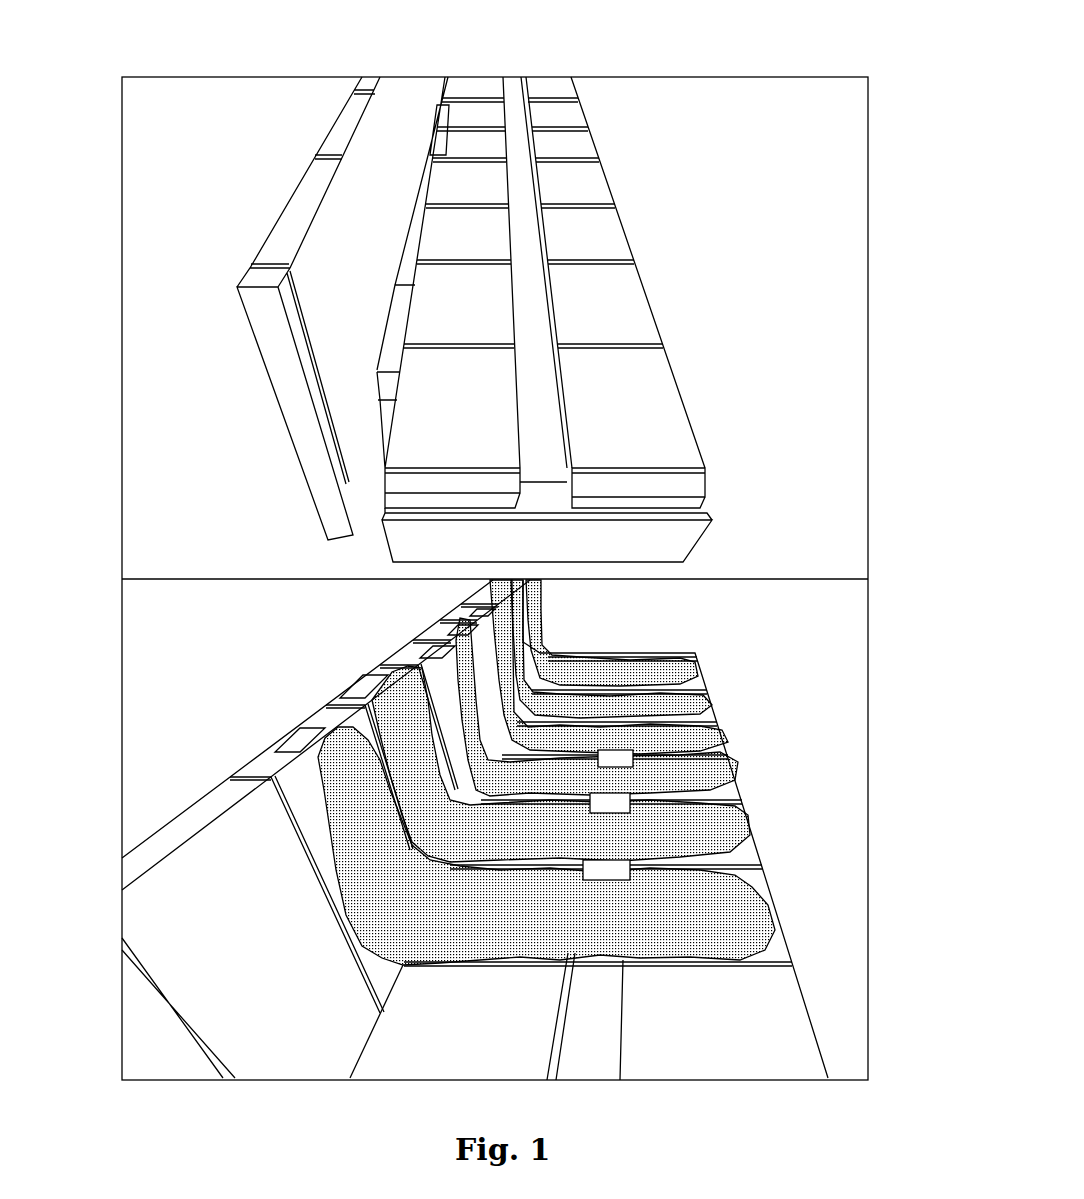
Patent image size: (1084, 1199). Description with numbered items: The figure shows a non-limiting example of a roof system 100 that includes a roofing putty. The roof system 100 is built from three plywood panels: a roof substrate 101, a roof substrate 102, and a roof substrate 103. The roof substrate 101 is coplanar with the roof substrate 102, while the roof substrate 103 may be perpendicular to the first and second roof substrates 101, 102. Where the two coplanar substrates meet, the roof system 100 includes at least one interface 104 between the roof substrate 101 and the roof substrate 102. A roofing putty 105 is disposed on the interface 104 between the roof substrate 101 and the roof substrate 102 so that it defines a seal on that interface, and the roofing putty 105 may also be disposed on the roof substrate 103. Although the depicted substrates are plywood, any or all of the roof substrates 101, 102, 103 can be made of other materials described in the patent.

The roof system 100 is at (502, 548).
The roof substrate 101 is at (617, 407).
The roof substrate 102 is at (460, 393).
The roof substrate 103 is at (330, 321).
The interface 104 is at (528, 382).
The roofing putty 105 is at (497, 827).